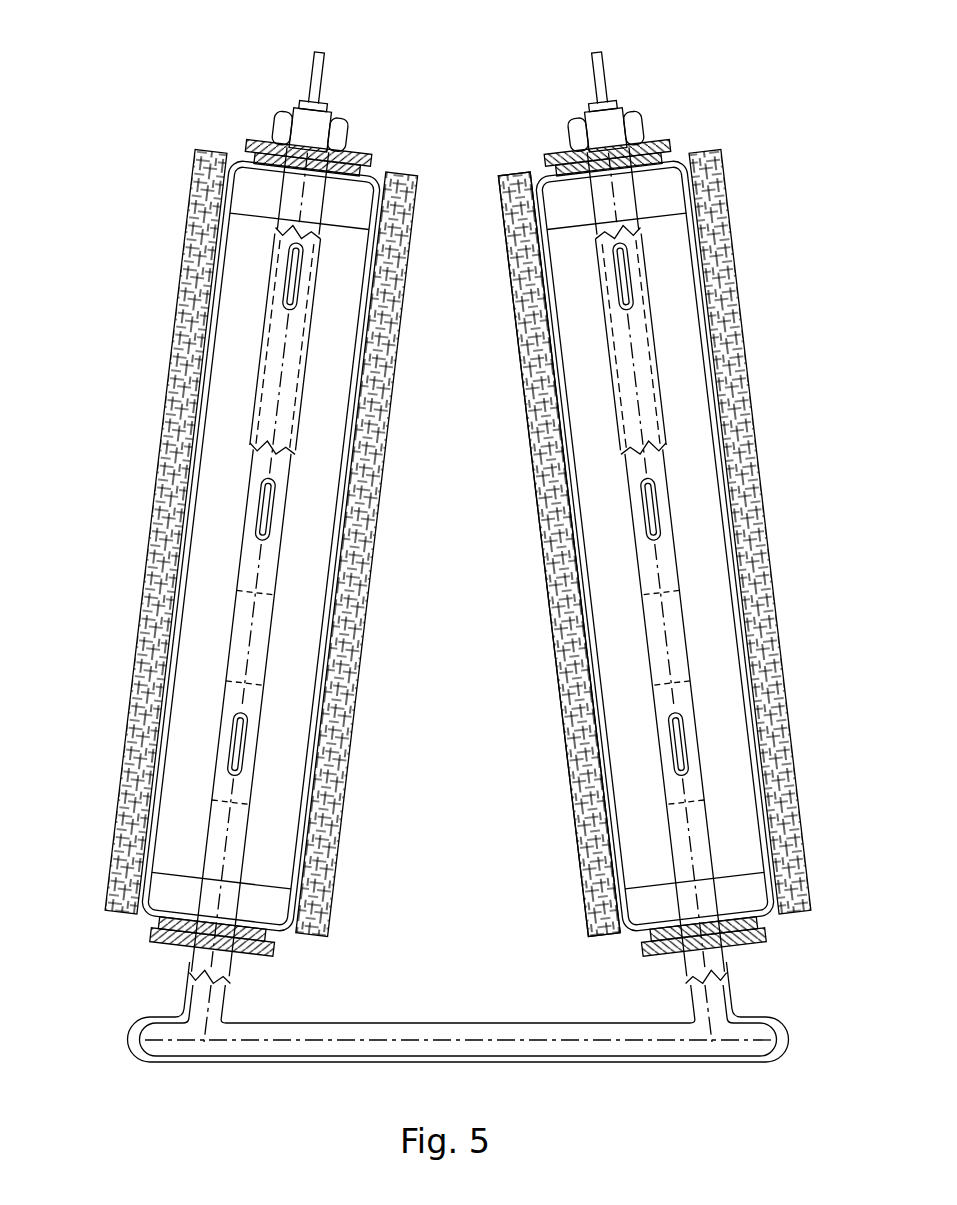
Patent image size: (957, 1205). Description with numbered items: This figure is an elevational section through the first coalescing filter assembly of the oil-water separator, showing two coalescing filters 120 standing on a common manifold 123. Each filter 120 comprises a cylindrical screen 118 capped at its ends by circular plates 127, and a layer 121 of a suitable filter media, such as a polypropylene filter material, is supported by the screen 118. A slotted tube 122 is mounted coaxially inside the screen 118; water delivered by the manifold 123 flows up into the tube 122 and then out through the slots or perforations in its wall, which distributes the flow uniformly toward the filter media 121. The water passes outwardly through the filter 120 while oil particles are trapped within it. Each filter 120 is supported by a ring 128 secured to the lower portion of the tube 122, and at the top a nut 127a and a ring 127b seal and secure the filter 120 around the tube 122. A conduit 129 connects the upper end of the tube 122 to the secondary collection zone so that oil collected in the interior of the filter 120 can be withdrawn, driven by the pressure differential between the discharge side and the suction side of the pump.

The cylindrical screen 118 is at (559, 554).
The coalescing filter 120 is at (261, 546).
The layer of filter media 121 is at (559, 554).
The slotted tube 122 is at (675, 712).
The manifold 123 is at (128, 1040).
The circular plate 127 is at (655, 546).
The nut 127a is at (606, 130).
The ring 127b is at (608, 159).
The ring 128 is at (174, 1003).
The conduit 129 is at (316, 81).